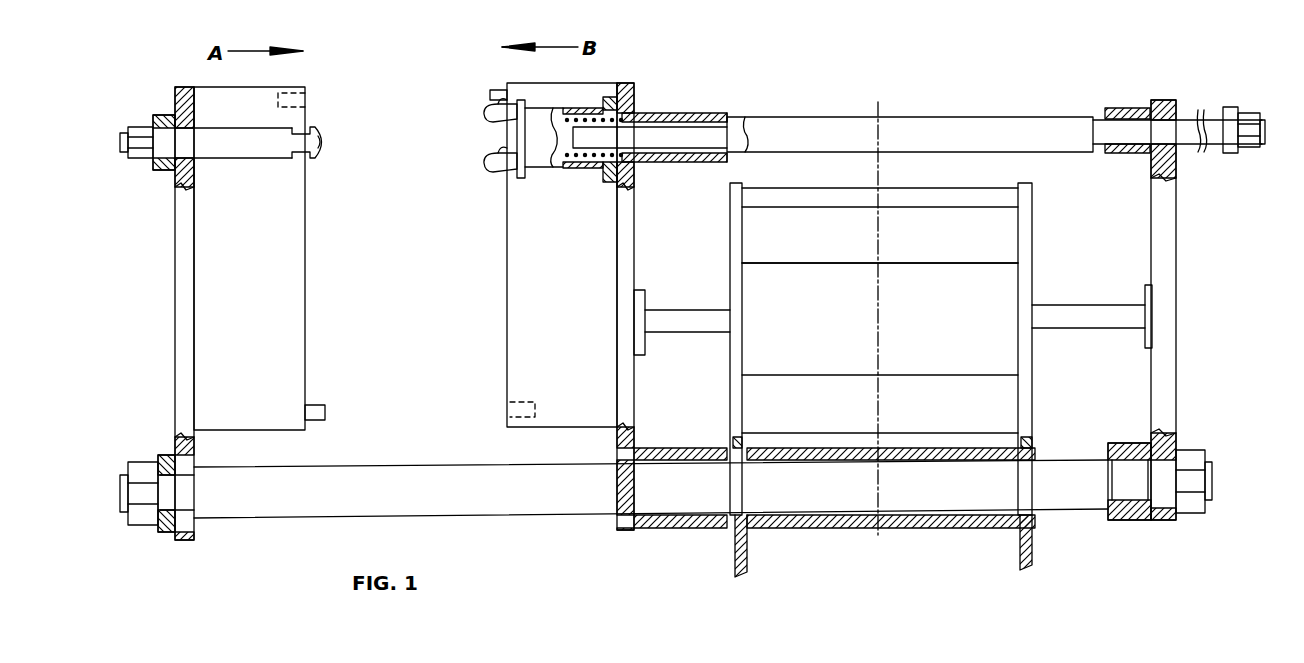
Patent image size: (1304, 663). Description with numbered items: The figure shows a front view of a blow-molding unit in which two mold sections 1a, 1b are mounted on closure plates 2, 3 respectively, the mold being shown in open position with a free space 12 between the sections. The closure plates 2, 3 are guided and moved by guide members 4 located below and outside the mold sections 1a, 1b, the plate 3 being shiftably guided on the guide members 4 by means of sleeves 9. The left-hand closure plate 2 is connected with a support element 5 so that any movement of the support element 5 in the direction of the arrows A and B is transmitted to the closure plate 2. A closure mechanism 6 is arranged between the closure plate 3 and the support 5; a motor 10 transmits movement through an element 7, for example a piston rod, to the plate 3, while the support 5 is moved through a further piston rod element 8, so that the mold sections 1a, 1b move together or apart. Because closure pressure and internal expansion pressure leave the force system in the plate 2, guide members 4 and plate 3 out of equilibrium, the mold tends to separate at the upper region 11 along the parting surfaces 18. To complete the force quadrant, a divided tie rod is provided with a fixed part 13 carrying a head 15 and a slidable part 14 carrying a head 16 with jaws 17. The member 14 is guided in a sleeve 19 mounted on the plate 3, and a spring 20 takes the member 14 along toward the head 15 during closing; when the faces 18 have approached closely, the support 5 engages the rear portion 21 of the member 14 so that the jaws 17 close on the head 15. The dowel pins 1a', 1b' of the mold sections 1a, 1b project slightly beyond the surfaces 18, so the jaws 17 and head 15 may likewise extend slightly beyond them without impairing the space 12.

The mold section 1a is at (274, 258).
The dowel pin 1a' is at (330, 387).
The mold section 1b is at (530, 255).
The dowel pin 1b' is at (484, 75).
The closure plate 2 is at (185, 273).
The closure plate 3 is at (634, 225).
The guide members 4 is at (468, 483).
The support element 5 is at (1160, 230).
The closure mechanism 6 is at (918, 190).
The element (piston rod) 7 is at (671, 318).
The element (further piston rod) 8 is at (1088, 310).
The sleeves 9 is at (678, 450).
The motor 10 is at (958, 265).
The region 11 is at (305, 100).
The space 12 is at (427, 236).
The fixed part of tie rod 13 is at (249, 163).
The slidable part of tie rod 14 is at (796, 120).
The head 15 is at (328, 143).
The head 16 is at (540, 158).
The jaws 17 is at (497, 172).
The parting surfaces 18 is at (507, 292).
The sleeve 19 is at (668, 113).
The spring 20 is at (586, 168).
The rear portion 21 is at (1230, 115).